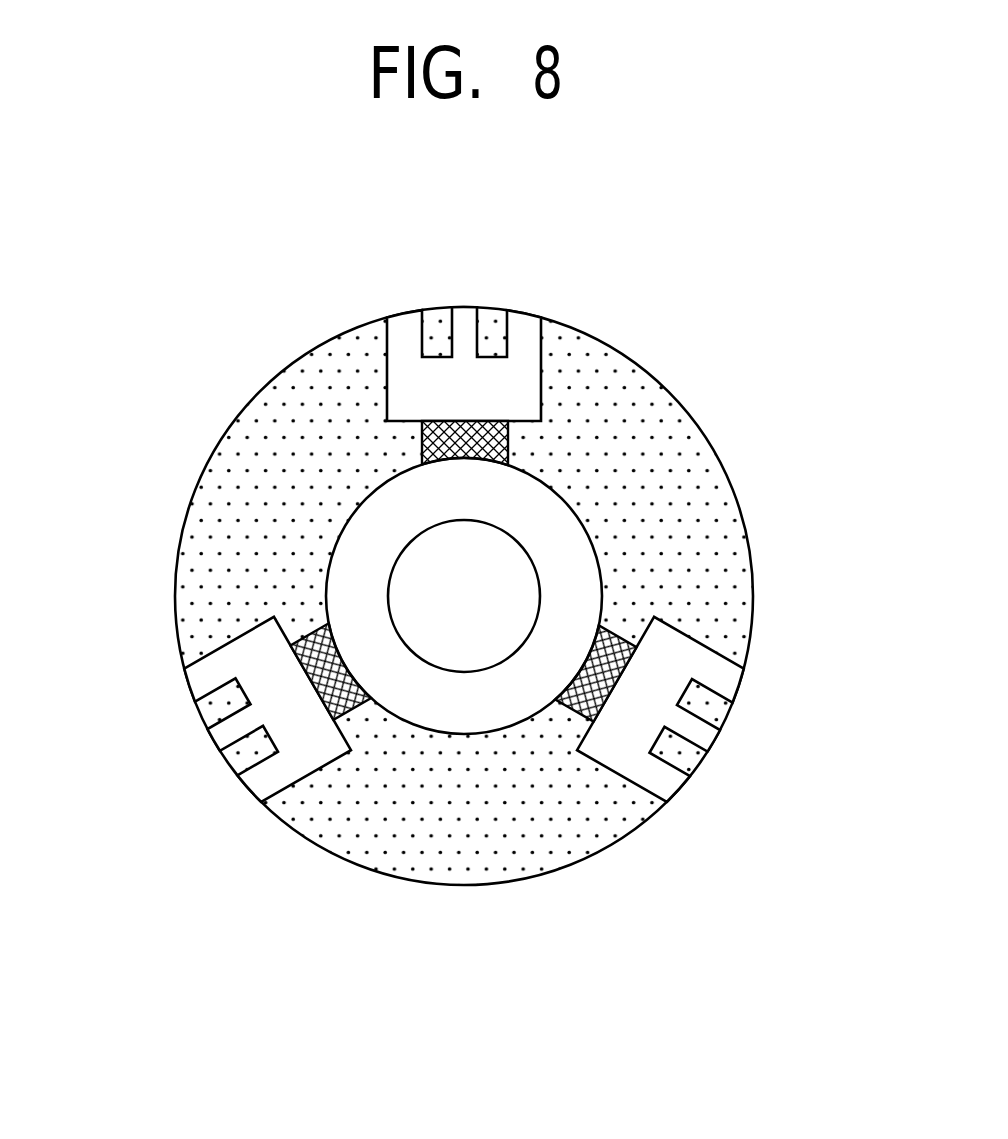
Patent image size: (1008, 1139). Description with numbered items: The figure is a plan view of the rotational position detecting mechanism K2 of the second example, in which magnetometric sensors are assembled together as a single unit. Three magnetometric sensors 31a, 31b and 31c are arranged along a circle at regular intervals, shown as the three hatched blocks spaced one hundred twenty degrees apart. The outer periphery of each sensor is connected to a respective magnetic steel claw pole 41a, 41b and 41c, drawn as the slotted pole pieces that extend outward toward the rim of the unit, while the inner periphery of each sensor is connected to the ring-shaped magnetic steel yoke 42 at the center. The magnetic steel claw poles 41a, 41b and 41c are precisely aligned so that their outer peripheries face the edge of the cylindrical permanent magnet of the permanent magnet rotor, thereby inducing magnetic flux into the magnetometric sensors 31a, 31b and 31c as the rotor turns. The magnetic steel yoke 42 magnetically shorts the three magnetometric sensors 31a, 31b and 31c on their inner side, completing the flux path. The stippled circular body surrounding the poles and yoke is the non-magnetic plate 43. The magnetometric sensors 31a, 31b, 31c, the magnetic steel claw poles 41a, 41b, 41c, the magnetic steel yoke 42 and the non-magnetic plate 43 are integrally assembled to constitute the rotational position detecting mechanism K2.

The magnetic steel claw pole 41a is at (523, 335).
The magnetic steel claw pole 41b is at (683, 650).
The magnetic steel claw pole 41c is at (313, 750).
The magnetometric sensor 31a is at (522, 442).
The magnetometric sensor 31b is at (568, 710).
The magnetometric sensor 31c is at (312, 630).
The magnetic steel yoke 42 is at (560, 555).
The non-magnetic plate 43 is at (680, 468).
The rotational position detecting mechanism K2 is at (420, 947).